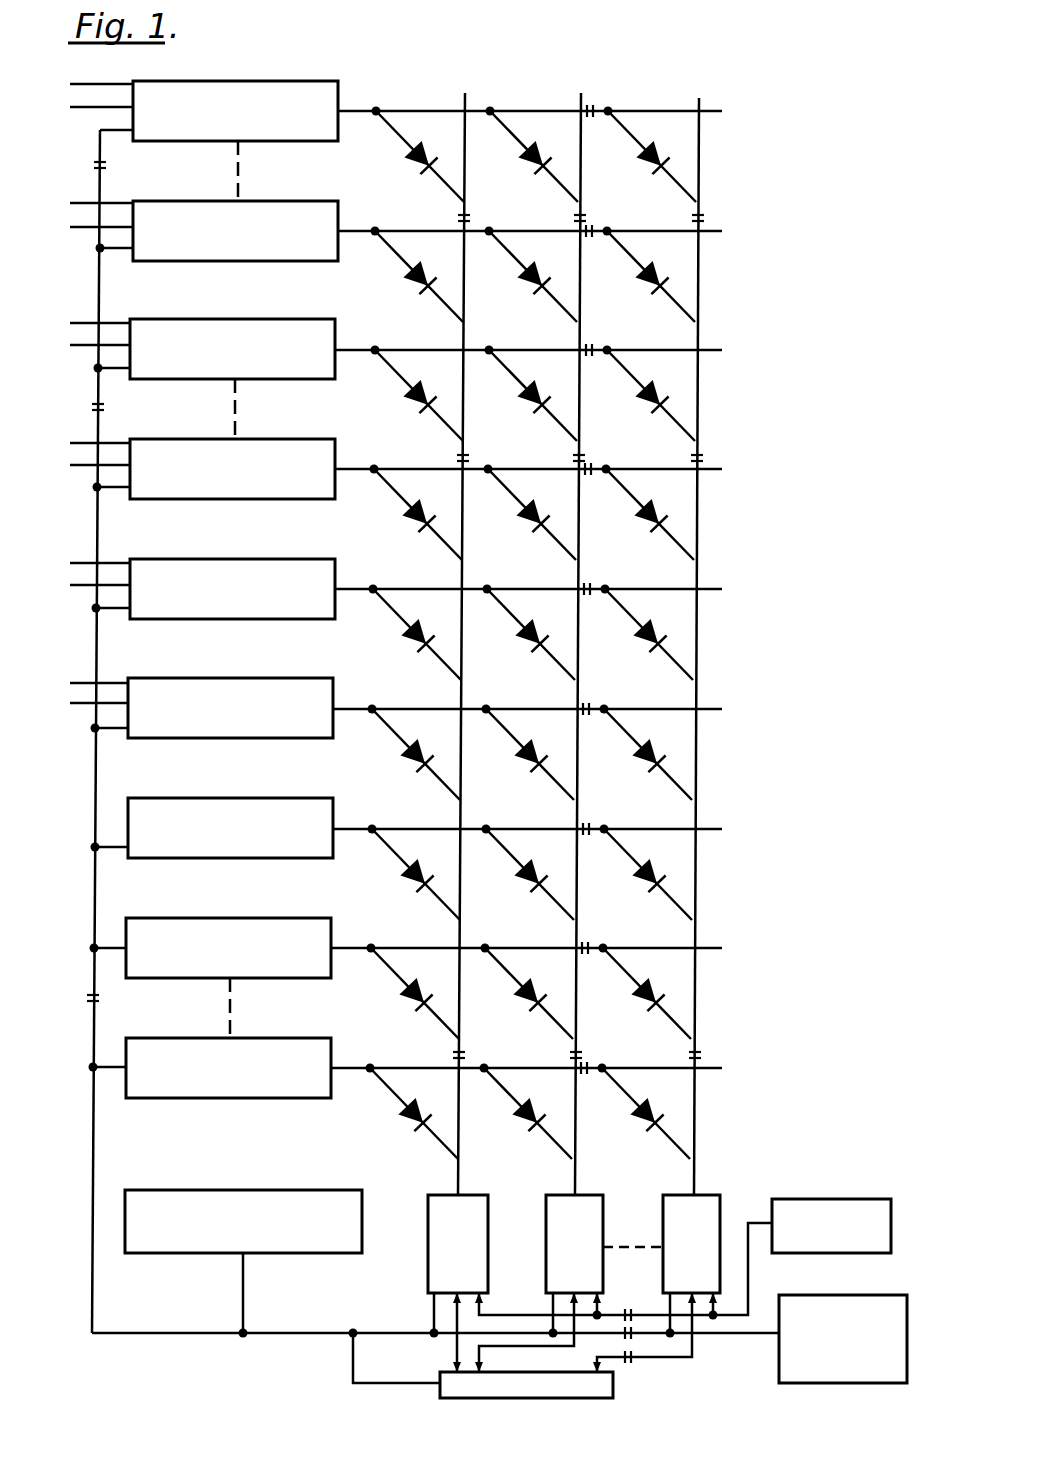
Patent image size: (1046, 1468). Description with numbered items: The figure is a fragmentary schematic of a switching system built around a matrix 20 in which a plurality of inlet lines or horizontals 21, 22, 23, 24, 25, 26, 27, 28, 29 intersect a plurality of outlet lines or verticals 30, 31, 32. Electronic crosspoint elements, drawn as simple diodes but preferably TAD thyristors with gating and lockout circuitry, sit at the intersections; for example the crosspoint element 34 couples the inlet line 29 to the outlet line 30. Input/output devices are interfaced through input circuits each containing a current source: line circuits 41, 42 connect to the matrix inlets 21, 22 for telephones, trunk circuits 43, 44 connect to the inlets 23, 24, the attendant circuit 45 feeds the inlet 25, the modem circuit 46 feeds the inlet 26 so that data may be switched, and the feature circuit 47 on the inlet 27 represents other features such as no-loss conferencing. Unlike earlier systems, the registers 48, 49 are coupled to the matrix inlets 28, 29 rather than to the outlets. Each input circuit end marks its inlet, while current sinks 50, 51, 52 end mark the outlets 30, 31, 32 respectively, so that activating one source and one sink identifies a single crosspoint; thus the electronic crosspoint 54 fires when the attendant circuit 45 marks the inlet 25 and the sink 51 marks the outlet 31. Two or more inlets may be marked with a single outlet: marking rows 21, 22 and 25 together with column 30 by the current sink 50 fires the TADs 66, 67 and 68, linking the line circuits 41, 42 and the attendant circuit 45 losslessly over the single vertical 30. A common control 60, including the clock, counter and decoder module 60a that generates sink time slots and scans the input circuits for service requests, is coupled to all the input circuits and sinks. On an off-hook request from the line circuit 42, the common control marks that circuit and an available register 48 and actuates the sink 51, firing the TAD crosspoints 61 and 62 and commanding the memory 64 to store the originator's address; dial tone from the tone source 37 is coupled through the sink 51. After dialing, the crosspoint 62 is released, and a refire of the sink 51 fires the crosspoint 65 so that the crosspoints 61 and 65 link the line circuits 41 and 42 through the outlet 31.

The matrix 20 is at (732, 570).
The matrix inlet 21 is at (358, 108).
The matrix inlet 22 is at (358, 228).
The matrix inlet 23 is at (355, 347).
The matrix inlet 24 is at (354, 466).
The matrix inlet 25 is at (354, 586).
The matrix inlet 26 is at (350, 706).
The matrix inlet 27 is at (351, 826).
The matrix inlet 28 is at (351, 945).
The matrix inlet 29 is at (350, 1065).
The matrix outlet 30 is at (459, 1185).
The matrix outlet 31 is at (575, 1185).
The matrix outlet 32 is at (694, 1185).
The crosspoint element 34 is at (412, 1120).
The tone source 37 is at (820, 1199).
The line circuit 41 is at (282, 141).
The line circuit 42 is at (278, 261).
The trunk circuit 43 is at (292, 379).
The trunk circuit 44 is at (288, 499).
The attendant circuit 45 is at (290, 619).
The modem circuit 46 is at (293, 738).
The feature circuit 47 is at (290, 858).
The register 48 is at (288, 978).
The register 49 is at (290, 1098).
The current sink 50 is at (428, 1256).
The current sink 51 is at (604, 1238).
The current sink 52 is at (663, 1258).
The electronic crosspoint 54 is at (528, 648).
The common control 60 is at (779, 1359).
The clock, counter and decoder module 60a is at (210, 1164).
The TAD crosspoint 61 is at (535, 290).
The TAD crosspoint 62 is at (530, 1002).
The memory 64 is at (614, 1386).
The crosspoint 65 is at (538, 170).
The TAD 66 is at (418, 158).
The TAD 67 is at (418, 283).
The TAD 68 is at (416, 645).